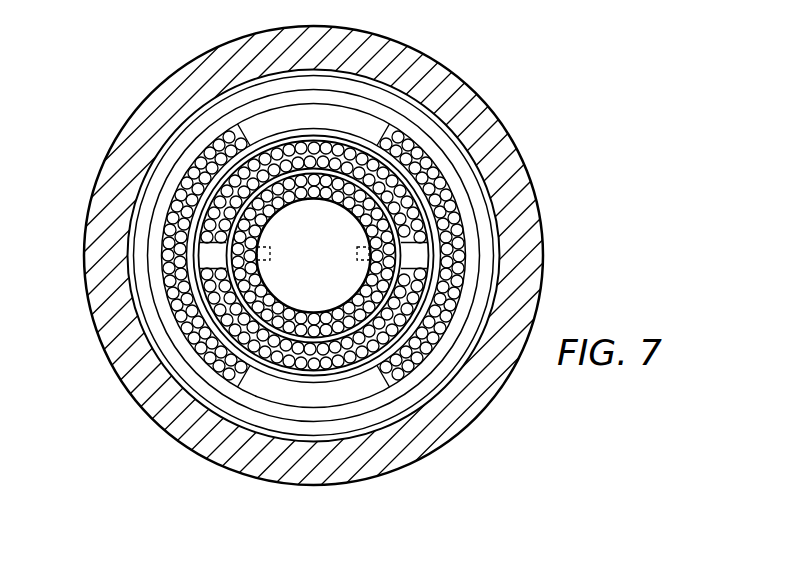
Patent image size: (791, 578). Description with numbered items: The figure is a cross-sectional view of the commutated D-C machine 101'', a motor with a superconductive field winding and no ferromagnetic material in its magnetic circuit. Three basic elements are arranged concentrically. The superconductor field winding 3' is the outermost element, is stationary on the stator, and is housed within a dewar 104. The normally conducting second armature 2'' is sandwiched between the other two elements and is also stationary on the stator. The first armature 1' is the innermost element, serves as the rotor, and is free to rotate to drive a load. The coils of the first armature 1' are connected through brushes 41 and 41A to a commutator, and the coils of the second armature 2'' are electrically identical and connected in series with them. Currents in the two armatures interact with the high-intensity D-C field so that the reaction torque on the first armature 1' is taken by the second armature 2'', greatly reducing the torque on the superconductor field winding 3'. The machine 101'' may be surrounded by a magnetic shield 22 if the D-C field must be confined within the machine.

The commutated D-C machine 101'' is at (346, 255).
The magnetic shield 22 is at (541, 263).
The dewar 104 is at (177, 153).
The superconductor field winding 3' is at (361, 256).
The second armature 2'' is at (387, 256).
The first armature 1' is at (313, 255).
The brush 41 is at (272, 247).
The brush 41A is at (355, 259).